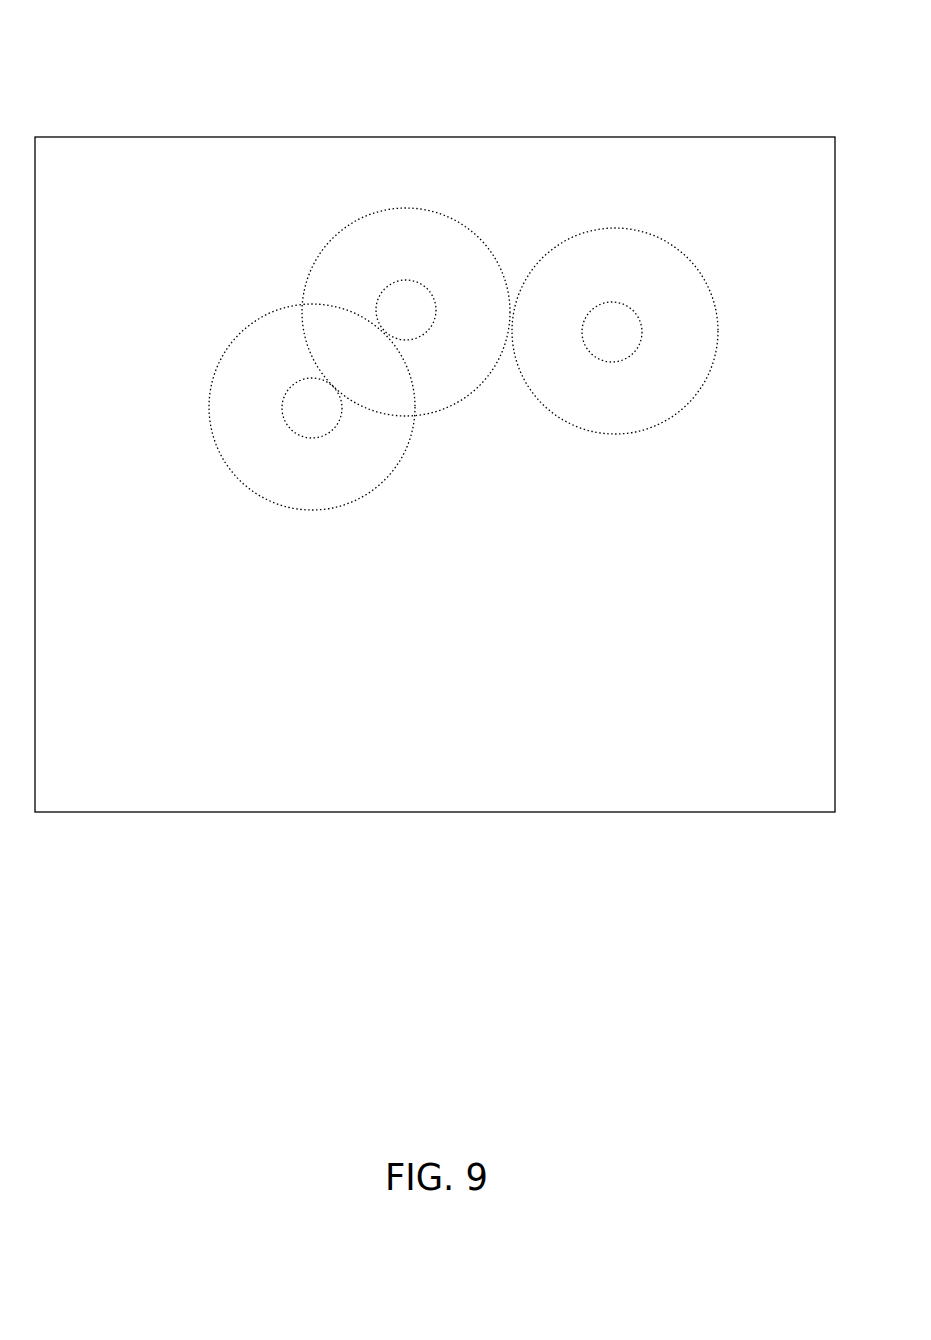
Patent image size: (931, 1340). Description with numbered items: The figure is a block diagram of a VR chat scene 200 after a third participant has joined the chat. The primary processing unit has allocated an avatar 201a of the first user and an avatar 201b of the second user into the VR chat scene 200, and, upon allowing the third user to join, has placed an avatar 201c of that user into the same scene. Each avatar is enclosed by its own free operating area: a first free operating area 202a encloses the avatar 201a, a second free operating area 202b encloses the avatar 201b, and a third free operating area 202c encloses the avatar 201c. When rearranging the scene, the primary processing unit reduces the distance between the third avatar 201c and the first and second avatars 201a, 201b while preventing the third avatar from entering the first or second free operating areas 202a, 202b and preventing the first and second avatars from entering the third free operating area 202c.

The VR chat scene 200 is at (435, 137).
The avatar of the first user 201a is at (283, 410).
The avatar of the second user 201b is at (437, 307).
The avatar of the third user 201c is at (615, 302).
The first free operating area 202a is at (310, 510).
The second free operating area 202b is at (407, 415).
The third free operating area 202c is at (614, 438).